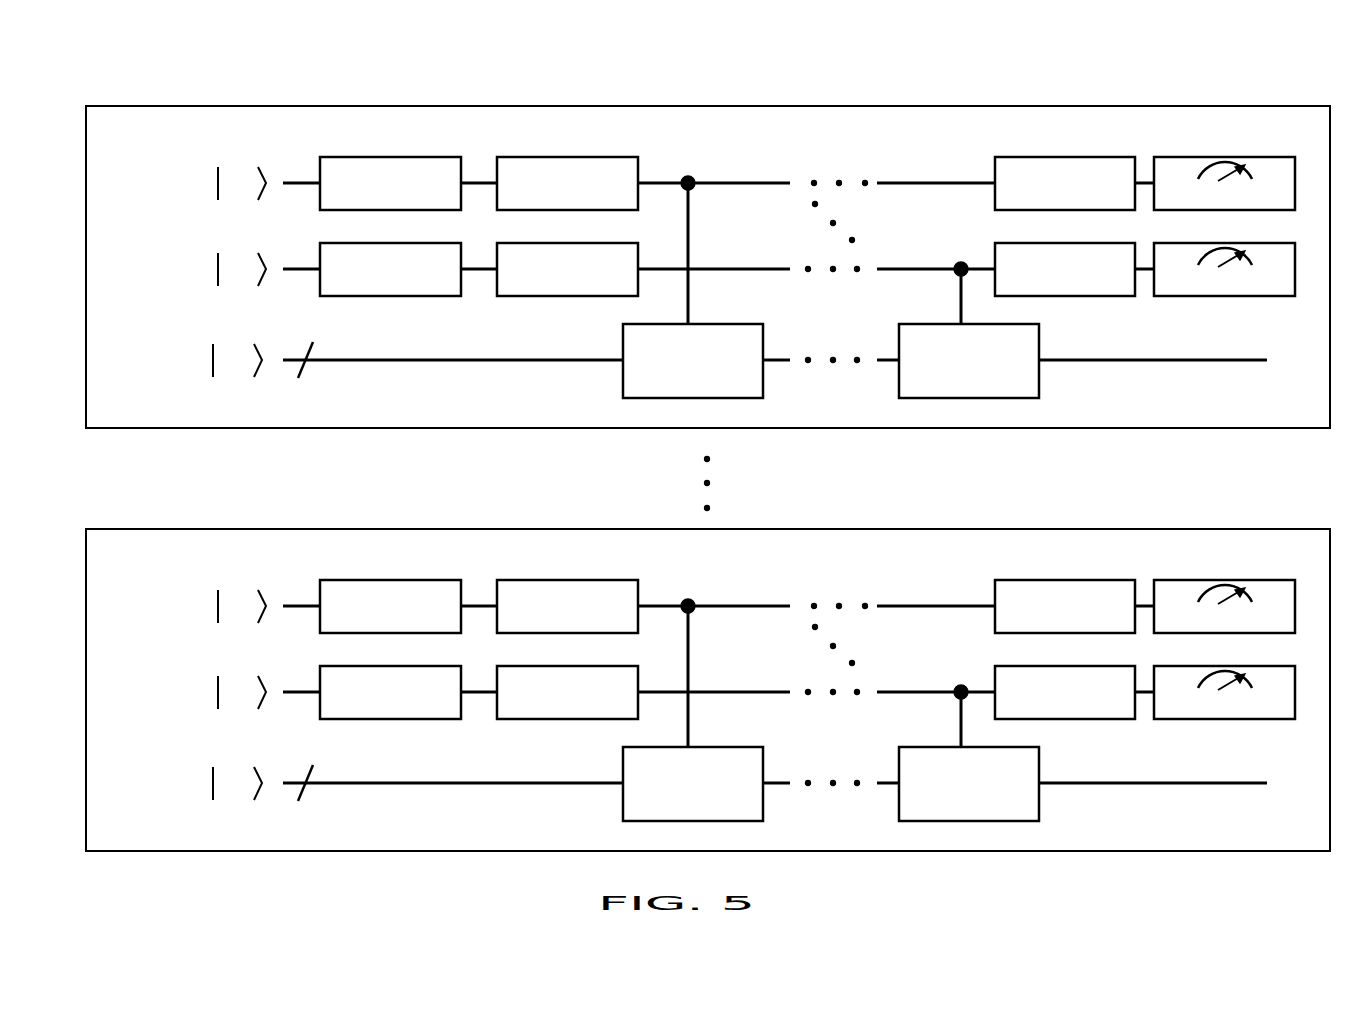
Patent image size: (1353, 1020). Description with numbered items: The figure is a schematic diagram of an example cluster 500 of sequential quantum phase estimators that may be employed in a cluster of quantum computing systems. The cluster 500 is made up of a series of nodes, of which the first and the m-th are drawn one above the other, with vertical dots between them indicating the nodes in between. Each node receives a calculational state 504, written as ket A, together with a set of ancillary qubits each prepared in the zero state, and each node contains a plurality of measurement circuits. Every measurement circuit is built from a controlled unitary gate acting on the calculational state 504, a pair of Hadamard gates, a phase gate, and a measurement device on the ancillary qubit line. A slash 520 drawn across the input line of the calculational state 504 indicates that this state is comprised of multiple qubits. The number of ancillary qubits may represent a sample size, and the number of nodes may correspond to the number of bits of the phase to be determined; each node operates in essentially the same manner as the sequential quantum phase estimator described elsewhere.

The cluster of sequential quantum phase estimators 500 is at (1122, 99).
The calculational state 504 is at (198, 372).
The slash 520 is at (307, 372).